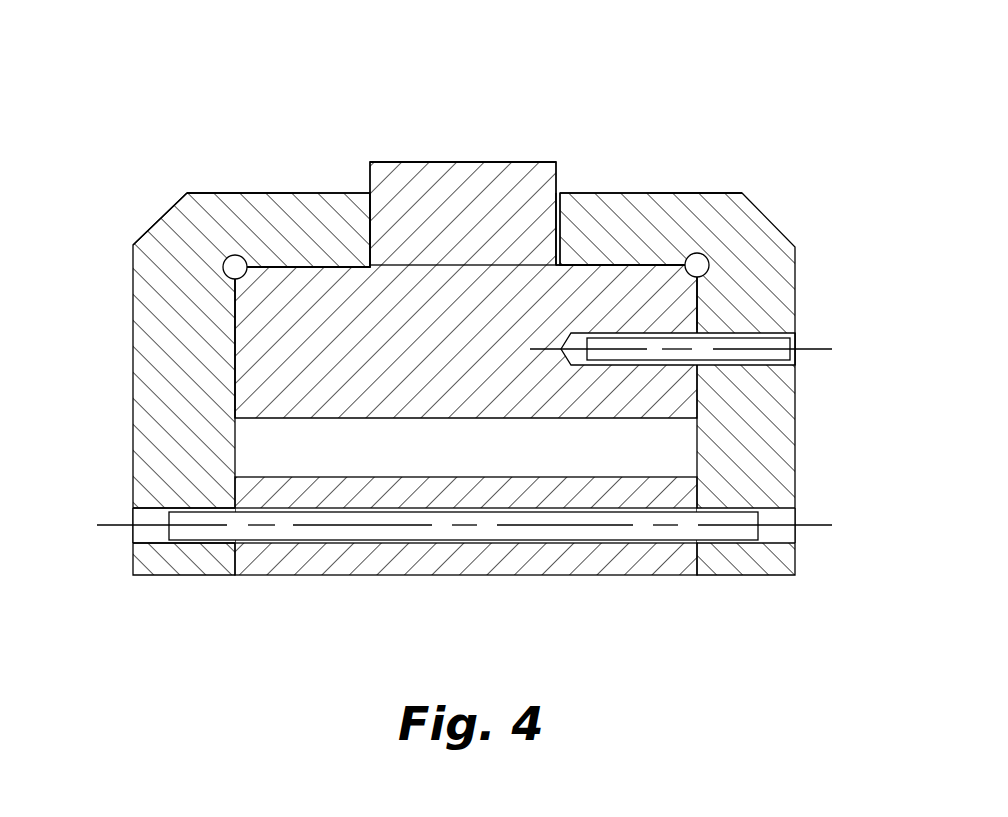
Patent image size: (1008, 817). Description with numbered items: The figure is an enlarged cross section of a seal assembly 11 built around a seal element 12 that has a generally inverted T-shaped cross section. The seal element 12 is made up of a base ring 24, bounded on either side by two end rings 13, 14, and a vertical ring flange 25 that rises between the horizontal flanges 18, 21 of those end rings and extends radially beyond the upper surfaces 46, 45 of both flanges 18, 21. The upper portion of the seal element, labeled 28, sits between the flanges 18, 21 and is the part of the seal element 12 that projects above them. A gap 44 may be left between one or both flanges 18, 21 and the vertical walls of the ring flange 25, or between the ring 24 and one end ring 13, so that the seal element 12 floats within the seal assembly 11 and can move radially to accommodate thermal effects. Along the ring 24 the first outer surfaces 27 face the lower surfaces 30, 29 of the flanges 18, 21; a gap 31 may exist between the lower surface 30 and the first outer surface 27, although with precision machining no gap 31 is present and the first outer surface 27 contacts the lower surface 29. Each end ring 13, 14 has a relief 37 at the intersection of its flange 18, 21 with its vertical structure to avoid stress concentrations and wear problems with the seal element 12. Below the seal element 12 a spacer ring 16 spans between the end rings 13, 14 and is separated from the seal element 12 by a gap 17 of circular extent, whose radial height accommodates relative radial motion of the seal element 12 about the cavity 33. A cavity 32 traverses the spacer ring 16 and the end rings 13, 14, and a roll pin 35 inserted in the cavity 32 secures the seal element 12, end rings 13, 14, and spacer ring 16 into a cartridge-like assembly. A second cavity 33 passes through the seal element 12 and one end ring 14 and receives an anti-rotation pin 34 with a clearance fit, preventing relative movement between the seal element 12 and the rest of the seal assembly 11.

The seal assembly 11 is at (463, 332).
The seal element 12 is at (500, 162).
The end ring 13 is at (152, 426).
The end ring 14 is at (777, 417).
The spacer ring 16 is at (313, 560).
The gap 17 is at (673, 448).
The flange 18 is at (287, 207).
The flange 21 is at (652, 207).
The ring 24 is at (248, 335).
The ring flange 25 is at (420, 195).
The first outer surface 27 is at (245, 298).
The raised boss 28 is at (472, 162).
The lower surface 29 is at (603, 258).
The lower surface 30 is at (325, 225).
The gap 31 is at (202, 208).
The cavity 32 is at (148, 533).
The cavity 33 is at (765, 333).
The anti-rotation pin 34 is at (775, 358).
The roll pin 35 is at (540, 532).
The relief 37 is at (223, 262).
The gap 44 is at (368, 190).
The upper surface 45 is at (708, 193).
The upper surface 46 is at (243, 207).